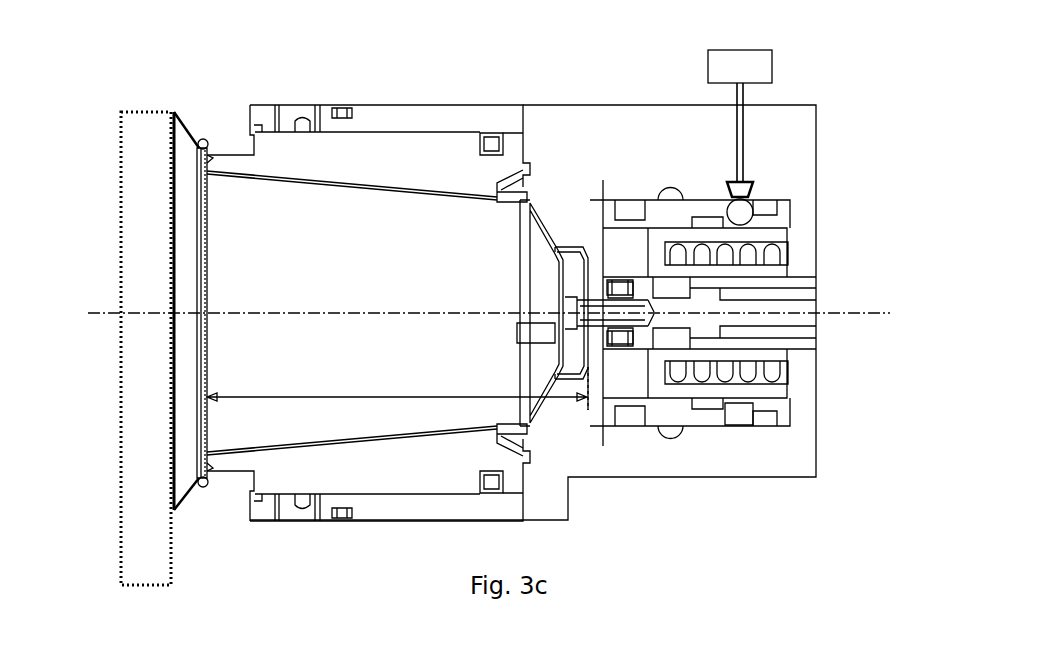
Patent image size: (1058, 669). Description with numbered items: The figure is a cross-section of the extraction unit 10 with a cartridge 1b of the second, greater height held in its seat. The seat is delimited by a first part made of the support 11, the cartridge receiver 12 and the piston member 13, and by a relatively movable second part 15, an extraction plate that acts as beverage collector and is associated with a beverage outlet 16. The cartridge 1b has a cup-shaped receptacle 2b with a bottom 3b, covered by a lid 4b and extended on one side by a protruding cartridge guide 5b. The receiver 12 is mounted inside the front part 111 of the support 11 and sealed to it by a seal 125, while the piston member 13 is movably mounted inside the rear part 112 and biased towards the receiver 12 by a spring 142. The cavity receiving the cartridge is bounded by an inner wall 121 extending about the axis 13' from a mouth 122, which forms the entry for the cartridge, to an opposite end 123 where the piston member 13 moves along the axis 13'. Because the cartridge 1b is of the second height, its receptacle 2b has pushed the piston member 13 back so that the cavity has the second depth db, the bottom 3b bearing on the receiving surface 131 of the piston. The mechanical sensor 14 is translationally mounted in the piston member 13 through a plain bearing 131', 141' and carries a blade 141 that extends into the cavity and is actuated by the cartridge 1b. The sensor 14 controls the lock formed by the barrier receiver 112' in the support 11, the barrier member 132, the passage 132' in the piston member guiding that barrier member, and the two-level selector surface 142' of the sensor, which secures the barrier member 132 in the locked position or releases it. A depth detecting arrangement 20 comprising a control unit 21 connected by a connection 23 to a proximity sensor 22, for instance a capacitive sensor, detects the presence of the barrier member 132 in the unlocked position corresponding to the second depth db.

The extraction unit 10 is at (817, 93).
The support 11 is at (578, 130).
The cartridge receiver 12 is at (383, 148).
The piston member 13 is at (703, 319).
The axis 13' is at (470, 268).
The mechanical sensor 14 is at (800, 298).
The second part 15 is at (182, 148).
The beverage outlet 16 is at (133, 120).
The depth detecting arrangement 20 is at (700, 47).
The control unit 21 is at (741, 49).
The proximity sensor 22 is at (741, 195).
The connection 23 is at (736, 140).
The front part 111 is at (510, 123).
The rear part 112 is at (633, 506).
The barrier receiver 112' is at (662, 323).
The inner wall 121 is at (366, 186).
The mouth 122 is at (207, 155).
The opposite end 123 is at (493, 190).
The seal 125 is at (492, 143).
The receiving surface 131 is at (576, 291).
The plain bearing 131' is at (650, 221).
The barrier member 132 is at (712, 187).
The circulation passage 132' is at (801, 301).
The blade 141 is at (551, 326).
The plain bearing 141' is at (622, 395).
The spring 142 is at (822, 347).
The selector 142' is at (816, 302).
The cartridge 1b is at (330, 341).
The cup-shaped receptacle 2b is at (405, 193).
The bottom 3b is at (537, 228).
The lid 4b is at (197, 277).
The cartridge guide 5b is at (204, 485).
The second depth db is at (397, 388).